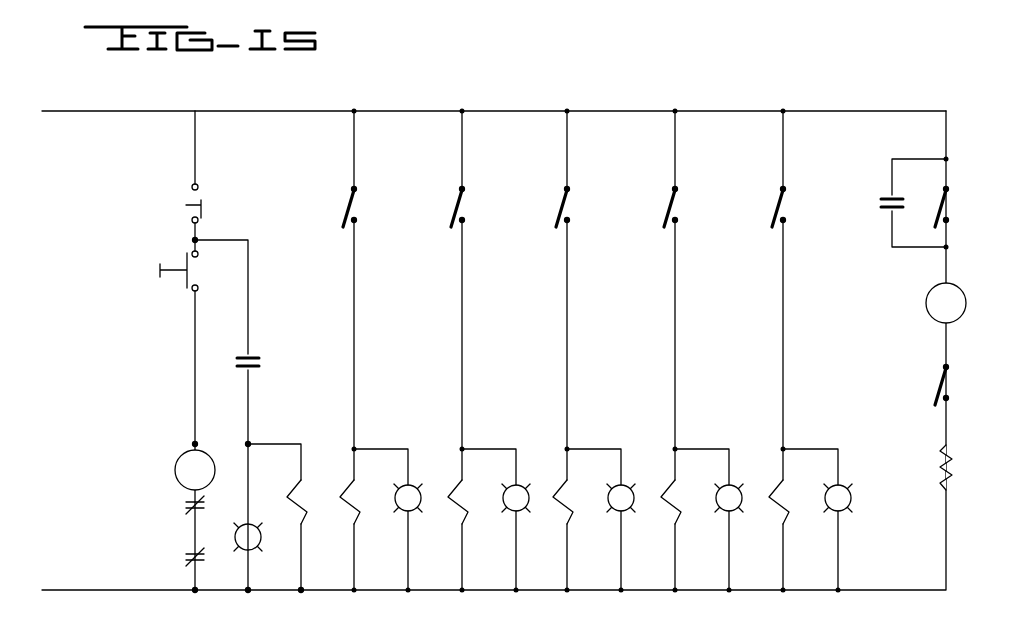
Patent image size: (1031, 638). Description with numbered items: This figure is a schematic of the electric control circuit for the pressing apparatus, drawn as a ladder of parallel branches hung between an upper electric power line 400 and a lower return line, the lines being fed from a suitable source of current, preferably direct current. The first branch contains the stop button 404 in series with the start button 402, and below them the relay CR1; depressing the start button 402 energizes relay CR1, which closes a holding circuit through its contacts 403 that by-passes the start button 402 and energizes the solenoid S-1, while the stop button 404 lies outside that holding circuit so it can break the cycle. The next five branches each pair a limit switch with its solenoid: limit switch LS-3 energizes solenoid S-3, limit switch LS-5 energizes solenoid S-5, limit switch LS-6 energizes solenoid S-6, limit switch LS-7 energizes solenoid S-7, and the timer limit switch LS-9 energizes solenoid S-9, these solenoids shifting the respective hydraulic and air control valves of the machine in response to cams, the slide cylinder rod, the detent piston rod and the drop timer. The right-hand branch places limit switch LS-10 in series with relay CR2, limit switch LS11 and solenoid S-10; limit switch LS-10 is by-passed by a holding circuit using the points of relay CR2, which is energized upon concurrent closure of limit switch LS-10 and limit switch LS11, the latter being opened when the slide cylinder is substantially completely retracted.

The electric power line 400 is at (108, 111).
The stop button 404 is at (186, 206).
The start button 402 is at (172, 258).
The holding circuit contacts 403 is at (252, 356).
The relay CR1 is at (195, 508).
The relay CR2 is at (946, 303).
The limit switch LS-3 is at (357, 208).
The limit switch LS-5 is at (465, 208).
The limit switch LS-6 is at (570, 208).
The limit switch LS-7 is at (678, 208).
The timer limit switch LS-9 is at (786, 208).
The limit switch LS-10 is at (949, 208).
The limit switch LS11 is at (949, 386).
The solenoid S-1 is at (306, 503).
The solenoid S-3 is at (359, 503).
The solenoid S-5 is at (467, 503).
The solenoid S-6 is at (572, 503).
The solenoid S-7 is at (680, 503).
The solenoid S-9 is at (788, 503).
The solenoid S-10 is at (952, 470).